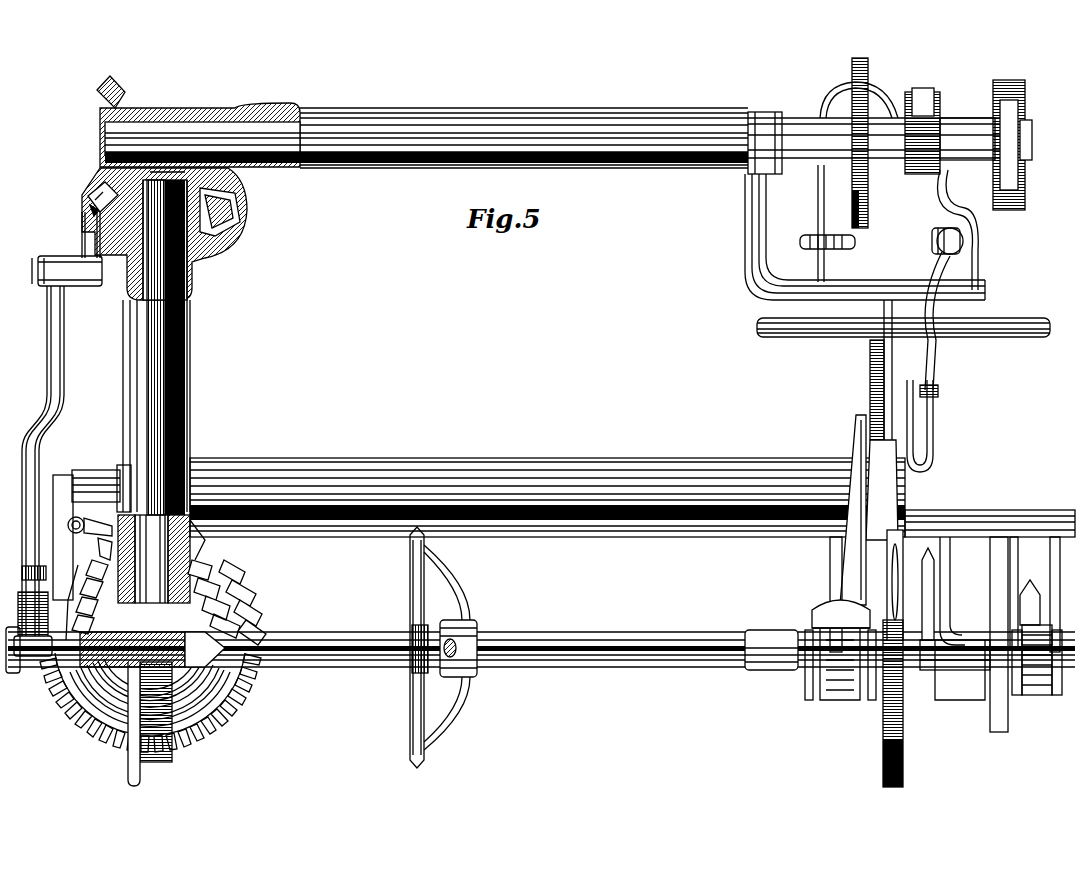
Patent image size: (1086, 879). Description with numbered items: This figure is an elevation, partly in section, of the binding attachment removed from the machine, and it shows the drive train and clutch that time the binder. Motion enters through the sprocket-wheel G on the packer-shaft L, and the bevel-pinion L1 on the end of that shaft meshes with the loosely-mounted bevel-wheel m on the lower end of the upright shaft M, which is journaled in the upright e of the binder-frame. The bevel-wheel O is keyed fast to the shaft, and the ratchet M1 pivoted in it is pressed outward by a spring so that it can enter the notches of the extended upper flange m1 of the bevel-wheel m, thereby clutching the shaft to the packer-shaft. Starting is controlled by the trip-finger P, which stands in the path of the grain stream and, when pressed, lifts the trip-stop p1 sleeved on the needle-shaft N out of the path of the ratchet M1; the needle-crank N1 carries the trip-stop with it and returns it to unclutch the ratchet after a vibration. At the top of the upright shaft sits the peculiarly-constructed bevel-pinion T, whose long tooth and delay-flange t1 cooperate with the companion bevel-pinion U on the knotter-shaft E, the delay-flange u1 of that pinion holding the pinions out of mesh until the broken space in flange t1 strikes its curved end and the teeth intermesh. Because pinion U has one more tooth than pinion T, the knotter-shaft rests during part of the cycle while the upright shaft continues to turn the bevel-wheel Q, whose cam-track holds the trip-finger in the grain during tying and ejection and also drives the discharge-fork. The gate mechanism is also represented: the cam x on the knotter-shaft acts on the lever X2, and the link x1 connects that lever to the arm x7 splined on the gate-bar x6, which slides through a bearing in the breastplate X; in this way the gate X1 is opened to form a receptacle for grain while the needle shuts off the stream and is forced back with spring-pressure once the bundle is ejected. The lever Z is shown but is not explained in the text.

The bevel-pinion U is at (147, 118).
The knotter-shaft E is at (212, 130).
The bevel-pinion T is at (212, 224).
The delay-flange u1 is at (90, 196).
The delay-flange t1 is at (92, 206).
The upright shaft M is at (176, 268).
The upright of the binder-frame e is at (176, 335).
The needle-crank N1 is at (60, 500).
The needle-shaft N is at (73, 480).
The trip-stop p1 is at (86, 528).
The bevel-wheel O is at (100, 547).
The ratchet M1 is at (136, 548).
The extended upper flange m1 is at (212, 580).
The bevel-wheel m is at (220, 618).
The bevel-pinion L1 is at (88, 700).
The bevel-wheel Q is at (228, 694).
The packer-shaft L is at (590, 636).
The sprocket-wheel G is at (412, 572).
The lever X2 is at (966, 216).
The cam x is at (1010, 202).
The link x1 is at (962, 258).
The breastplate X is at (950, 284).
The gate X1 is at (932, 332).
The gate-bar x6 is at (792, 334).
The arm x7 is at (930, 388).
The trip-finger P is at (912, 436).
The lever Z is at (860, 447).